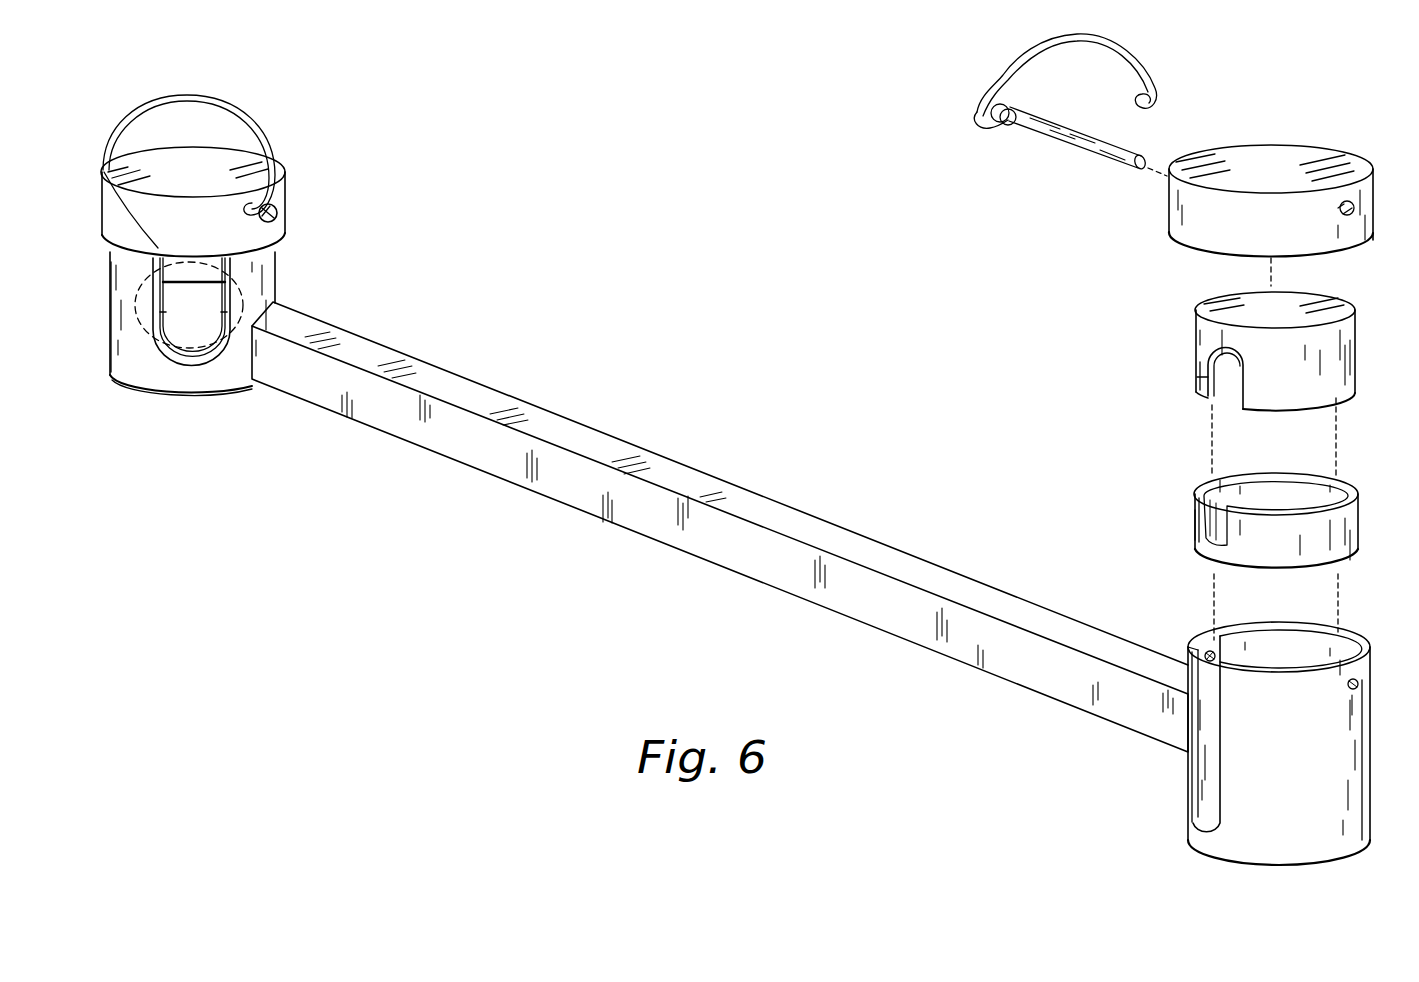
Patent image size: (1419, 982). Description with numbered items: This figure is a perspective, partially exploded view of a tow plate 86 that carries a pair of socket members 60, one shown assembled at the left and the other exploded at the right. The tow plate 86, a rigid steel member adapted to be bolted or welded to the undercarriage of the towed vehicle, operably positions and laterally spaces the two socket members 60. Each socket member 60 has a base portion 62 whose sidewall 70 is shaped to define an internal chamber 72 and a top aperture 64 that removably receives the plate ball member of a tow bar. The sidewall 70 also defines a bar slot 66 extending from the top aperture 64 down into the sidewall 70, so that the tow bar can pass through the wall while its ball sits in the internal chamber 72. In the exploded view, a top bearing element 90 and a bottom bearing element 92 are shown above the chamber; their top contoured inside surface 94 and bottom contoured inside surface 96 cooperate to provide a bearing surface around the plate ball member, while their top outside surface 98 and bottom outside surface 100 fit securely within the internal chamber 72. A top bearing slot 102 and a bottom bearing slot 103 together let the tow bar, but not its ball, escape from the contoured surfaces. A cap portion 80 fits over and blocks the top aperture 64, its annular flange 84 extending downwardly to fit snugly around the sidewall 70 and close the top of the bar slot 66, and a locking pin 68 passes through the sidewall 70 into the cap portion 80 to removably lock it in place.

The socket member 60 is at (676, 253).
The base portion 62 is at (162, 385).
The top aperture 64 is at (1264, 722).
The bar slot 66 is at (1192, 779).
The locking pin 68 is at (278, 213).
The sidewall 70 is at (123, 344).
The internal chamber 72 is at (1300, 642).
The cap portion 80 is at (178, 152).
The annular flange 84 is at (103, 170).
The tow plate 86 is at (625, 447).
The top bearing element 90 is at (1249, 383).
The bottom bearing element 92 is at (788, 486).
The top contoured inside surface 94 is at (192, 268).
The bottom contoured inside surface 96 is at (193, 333).
The top outside surface 98 is at (1275, 391).
The bottom outside surface 100 is at (1265, 556).
The top bearing slot 102 is at (1200, 376).
The bottom bearing slot 103 is at (1197, 508).